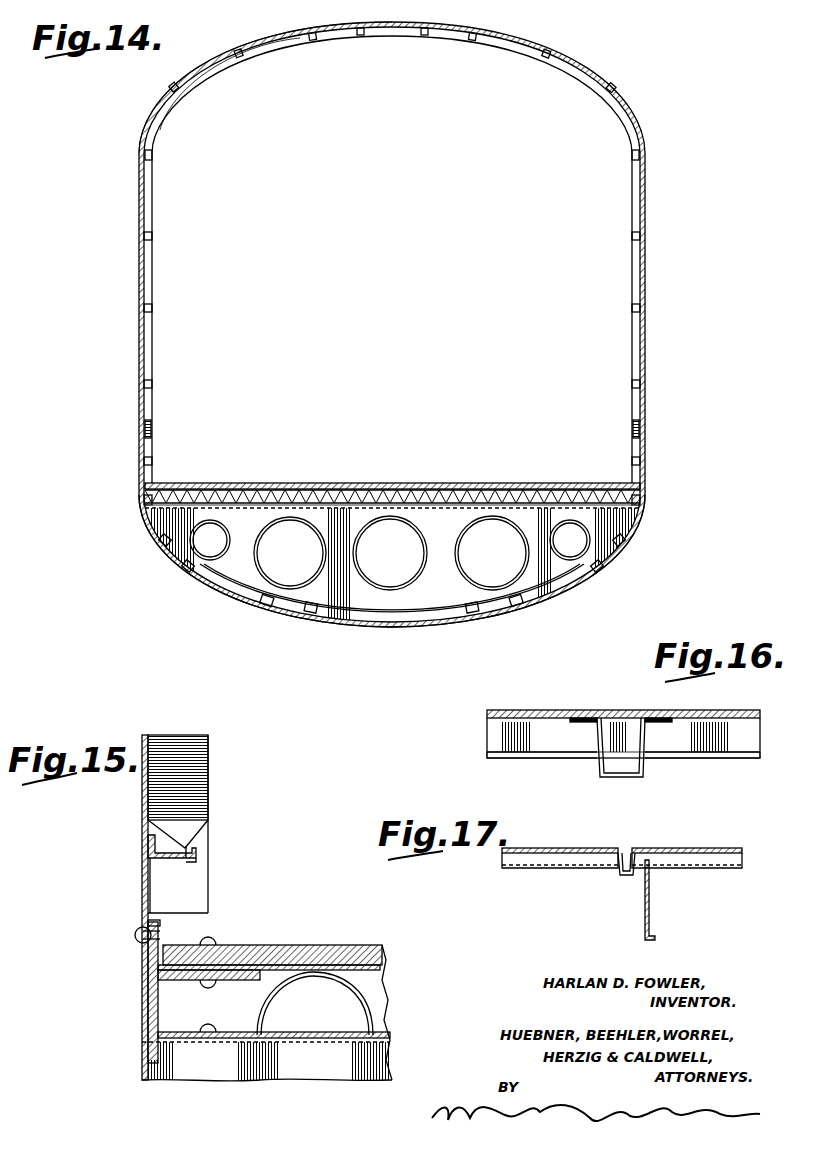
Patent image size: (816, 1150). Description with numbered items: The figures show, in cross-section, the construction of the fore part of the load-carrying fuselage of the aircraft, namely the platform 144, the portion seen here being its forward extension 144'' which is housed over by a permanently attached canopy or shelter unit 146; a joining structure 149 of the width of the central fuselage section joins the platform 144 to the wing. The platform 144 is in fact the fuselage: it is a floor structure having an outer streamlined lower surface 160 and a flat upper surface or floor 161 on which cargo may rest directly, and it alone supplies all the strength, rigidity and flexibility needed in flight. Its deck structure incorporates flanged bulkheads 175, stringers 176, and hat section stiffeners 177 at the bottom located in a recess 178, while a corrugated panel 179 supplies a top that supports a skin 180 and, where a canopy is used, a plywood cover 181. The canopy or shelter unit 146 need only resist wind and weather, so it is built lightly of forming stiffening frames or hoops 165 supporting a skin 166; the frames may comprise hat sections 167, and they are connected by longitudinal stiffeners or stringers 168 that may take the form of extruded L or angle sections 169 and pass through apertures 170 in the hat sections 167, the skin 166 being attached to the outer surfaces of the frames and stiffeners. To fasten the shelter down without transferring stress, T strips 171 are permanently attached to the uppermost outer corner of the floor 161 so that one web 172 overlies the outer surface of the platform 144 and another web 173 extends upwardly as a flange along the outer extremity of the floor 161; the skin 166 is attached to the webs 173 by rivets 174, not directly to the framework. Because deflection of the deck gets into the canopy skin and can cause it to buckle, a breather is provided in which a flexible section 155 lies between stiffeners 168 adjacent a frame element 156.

In FIG. 14, the platform 144 is at (419, 571).
In FIG. 15, the platform 144 is at (267, 1078).
In FIG. 14, the forward extension 144'' is at (637, 567).
In FIG. 14, the canopy or shelter unit 146 is at (649, 305).
In FIG. 17, the canopy or shelter unit 146 is at (515, 845).
In FIG. 17, the joining structure 149 is at (703, 848).
In FIG. 17, the flexible section 155 is at (622, 876).
In FIG. 17, the frame element 156 is at (650, 905).
In FIG. 14, the outer streamlined lower surface 160 is at (498, 603).
In FIG. 14, the floor 161 is at (262, 485).
In FIG. 15, the floor 161 is at (328, 940).
In FIG. 14, the forming frames 165 is at (258, 58).
In FIG. 15, the forming frames 165 is at (210, 752).
In FIG. 16, the forming frames 165 is at (594, 777).
In FIG. 14, the skin 166 is at (188, 66).
In FIG. 15, the skin 166 is at (143, 787).
In FIG. 16, the skin 166 is at (584, 706).
In FIG. 17, the skin 166 is at (570, 848).
In FIG. 14, the hat sections 167 is at (197, 84).
In FIG. 15, the hat sections 167 is at (172, 748).
In FIG. 16, the hat sections 167 is at (643, 770).
In FIG. 14, the stiffeners 168 is at (153, 155).
In FIG. 15, the stiffeners 168 is at (192, 856).
In FIG. 16, the stiffeners 168 is at (505, 758).
In FIG. 17, the stiffeners 168 is at (538, 872).
In FIG. 14, the angle sections 169 is at (152, 240).
In FIG. 15, the angle sections 169 is at (193, 863).
In FIG. 16, the angle sections 169 is at (712, 758).
In FIG. 15, the apertures 170 is at (183, 840).
In FIG. 14, the T strips 171 is at (144, 500).
In FIG. 15, the T strips 171 is at (158, 986).
In FIG. 15, the web 172 is at (165, 1021).
In FIG. 15, the web 173 is at (161, 924).
In FIG. 15, the rivets 174 is at (135, 937).
In FIG. 14, the flanged bulkheads 175 is at (562, 590).
In FIG. 14, the stringers 176 is at (186, 570).
In FIG. 14, the hat section stiffeners 177 is at (305, 612).
In FIG. 14, the recess 178 is at (384, 618).
In FIG. 14, the corrugated panel 179 is at (388, 494).
In FIG. 15, the corrugated panel 179 is at (284, 1008).
In FIG. 14, the skin 180 is at (432, 507).
In FIG. 14, the plywood cover 181 is at (471, 488).
In FIG. 15, the plywood cover 181 is at (378, 944).